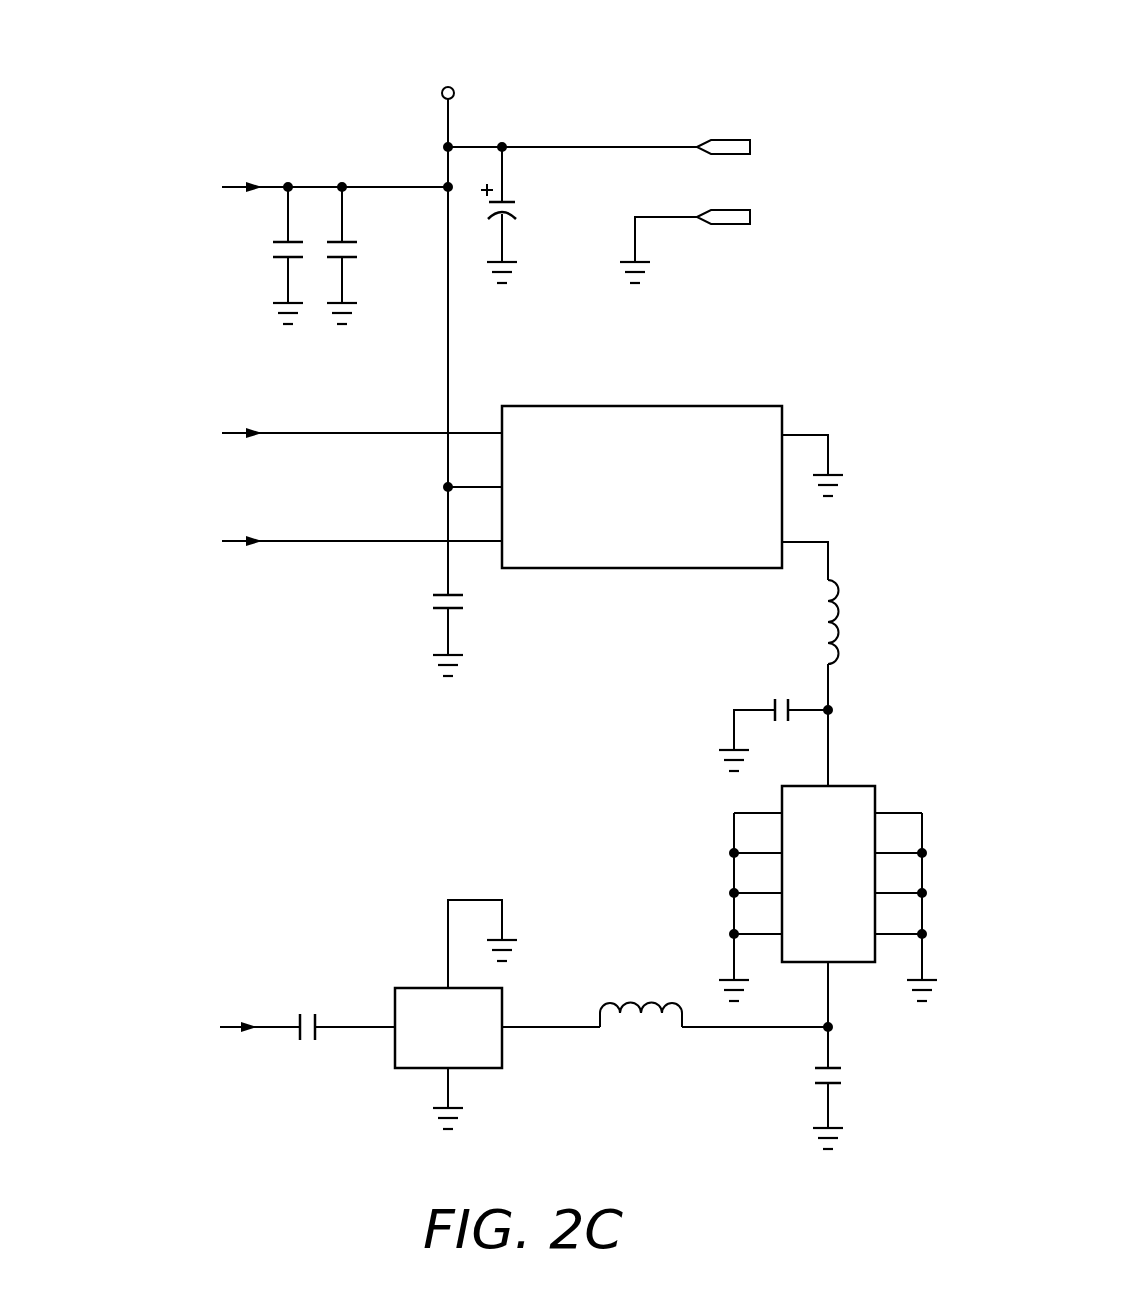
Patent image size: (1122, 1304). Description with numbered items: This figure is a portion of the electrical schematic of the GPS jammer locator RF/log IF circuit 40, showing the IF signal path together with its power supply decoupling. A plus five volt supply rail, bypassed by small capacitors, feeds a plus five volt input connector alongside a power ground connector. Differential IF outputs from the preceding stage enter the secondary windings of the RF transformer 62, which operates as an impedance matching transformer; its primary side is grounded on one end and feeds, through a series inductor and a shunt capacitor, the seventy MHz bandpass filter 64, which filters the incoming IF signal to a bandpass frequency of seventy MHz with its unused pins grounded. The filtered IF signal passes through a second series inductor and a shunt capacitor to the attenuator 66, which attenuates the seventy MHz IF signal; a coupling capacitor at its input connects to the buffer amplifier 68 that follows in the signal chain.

The GPS jammer locator RF/log IF circuit 40 is at (615, 62).
The RF transformer 62 is at (651, 416).
The bandpass filter 64 is at (864, 796).
The attenuator 66 is at (411, 997).
The buffer amplifier 68 is at (202, 1029).